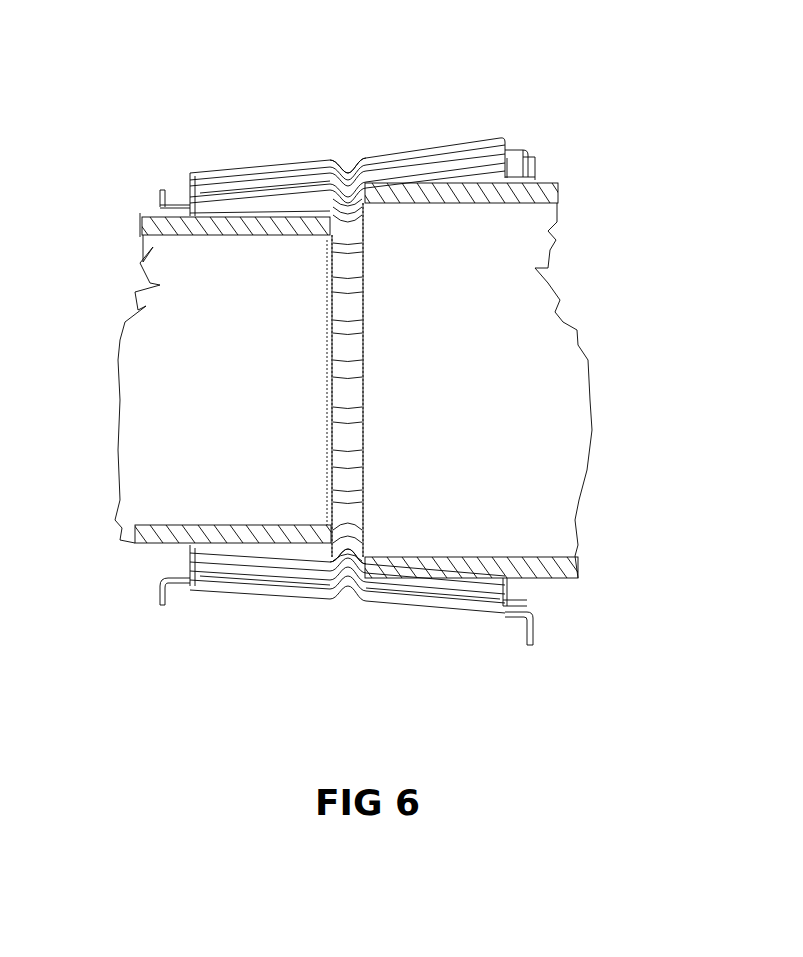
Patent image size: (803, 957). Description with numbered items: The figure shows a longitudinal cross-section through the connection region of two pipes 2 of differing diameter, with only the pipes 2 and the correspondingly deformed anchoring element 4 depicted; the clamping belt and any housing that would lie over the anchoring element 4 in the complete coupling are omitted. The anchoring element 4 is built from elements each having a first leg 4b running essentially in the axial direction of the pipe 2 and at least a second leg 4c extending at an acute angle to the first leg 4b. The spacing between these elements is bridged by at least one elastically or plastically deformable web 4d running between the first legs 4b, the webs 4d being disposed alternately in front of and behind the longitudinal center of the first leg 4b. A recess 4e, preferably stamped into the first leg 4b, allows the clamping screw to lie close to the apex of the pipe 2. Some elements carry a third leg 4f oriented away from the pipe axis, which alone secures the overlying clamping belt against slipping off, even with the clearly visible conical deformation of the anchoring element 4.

The pipe 2 is at (540, 183).
The anchoring element 4 is at (370, 346).
The first leg 4b is at (428, 130).
The second leg 4c is at (506, 158).
The deformable web 4d is at (210, 185).
The recess 4e is at (342, 130).
The third leg 4f is at (523, 158).